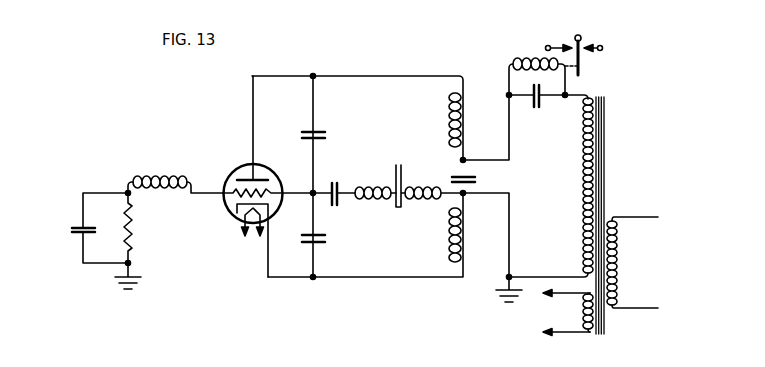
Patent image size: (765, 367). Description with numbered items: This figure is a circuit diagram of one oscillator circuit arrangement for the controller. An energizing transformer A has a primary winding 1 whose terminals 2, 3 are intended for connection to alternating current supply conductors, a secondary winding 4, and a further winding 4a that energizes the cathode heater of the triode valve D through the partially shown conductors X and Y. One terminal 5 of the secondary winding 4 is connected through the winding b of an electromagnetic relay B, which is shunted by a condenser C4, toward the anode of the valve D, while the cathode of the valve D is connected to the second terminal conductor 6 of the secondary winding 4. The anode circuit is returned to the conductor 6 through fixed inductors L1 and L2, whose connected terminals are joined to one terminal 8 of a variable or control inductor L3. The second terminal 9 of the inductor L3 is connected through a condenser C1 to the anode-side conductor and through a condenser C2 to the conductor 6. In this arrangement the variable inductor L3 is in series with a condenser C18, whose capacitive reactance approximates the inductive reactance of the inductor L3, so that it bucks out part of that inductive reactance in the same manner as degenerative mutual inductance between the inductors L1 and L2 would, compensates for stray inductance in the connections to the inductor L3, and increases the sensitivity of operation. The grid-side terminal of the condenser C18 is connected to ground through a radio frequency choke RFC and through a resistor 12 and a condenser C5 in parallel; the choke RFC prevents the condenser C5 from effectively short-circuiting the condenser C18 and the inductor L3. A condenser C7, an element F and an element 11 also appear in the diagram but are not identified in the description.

The condenser C5 is at (68, 232).
The resistor 12 is at (133, 229).
The radio frequency choke coil RFC is at (183, 173).
The triode valve D is at (254, 176).
The conductor X is at (415, 257).
The conductor Y is at (422, 289).
The condenser C1 is at (326, 137).
The condenser C2 is at (326, 239).
The second terminal of inductor L3 9 is at (327, 188).
The condenser C18 is at (335, 183).
The variable inductor L3 is at (380, 202).
The filter element F is at (401, 164).
The electrode 11 is at (402, 210).
The terminal of inductor L3 8 is at (447, 190).
The capacitor C7 is at (476, 180).
The fixed inductor L1 is at (461, 120).
The fixed inductor L2 is at (462, 236).
The electromagnetic relay B is at (539, 43).
The relay winding b is at (537, 67).
The condenser C4 is at (537, 108).
The terminal of secondary winding 5 is at (575, 96).
The energizing transformer A is at (628, 188).
The secondary winding 4 is at (583, 183).
The second terminal conductor 6 is at (563, 274).
The heater winding 4a is at (584, 312).
The primary winding 1 is at (618, 262).
The primary terminal 3 is at (640, 216).
The primary terminal 2 is at (646, 307).